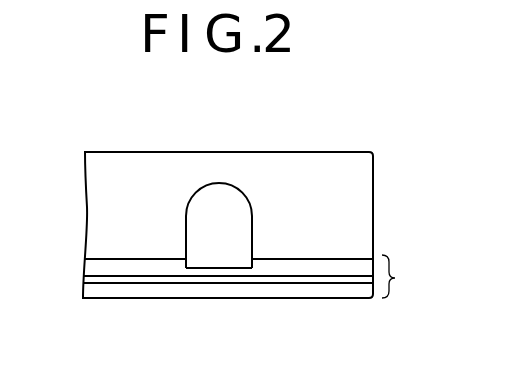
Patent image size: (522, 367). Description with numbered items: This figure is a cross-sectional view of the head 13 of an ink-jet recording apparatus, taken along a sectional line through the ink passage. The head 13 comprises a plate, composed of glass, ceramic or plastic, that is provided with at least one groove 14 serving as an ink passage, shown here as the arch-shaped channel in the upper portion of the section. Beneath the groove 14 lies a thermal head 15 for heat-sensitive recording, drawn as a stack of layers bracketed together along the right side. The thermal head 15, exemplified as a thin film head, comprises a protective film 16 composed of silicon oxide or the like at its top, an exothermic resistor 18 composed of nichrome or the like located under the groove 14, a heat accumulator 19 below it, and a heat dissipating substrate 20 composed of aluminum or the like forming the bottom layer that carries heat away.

The head 13 is at (106, 152).
The groove 14 is at (222, 184).
The thermal head 15 is at (406, 276).
The protective film 16 is at (300, 259).
The exothermic resistor 18 is at (252, 269).
The heat accumulator 19 is at (347, 278).
The heat dissipating substrate 20 is at (337, 296).